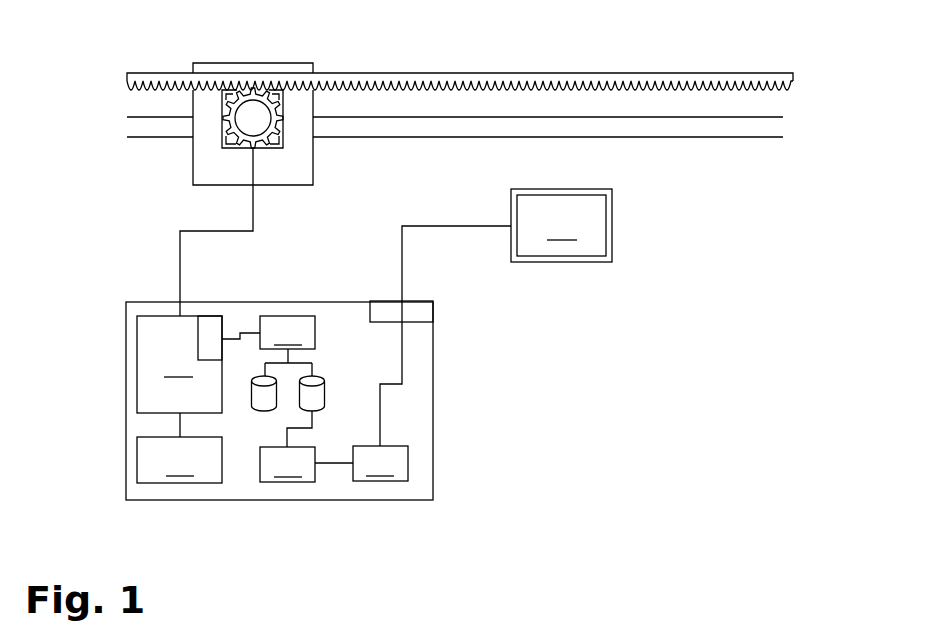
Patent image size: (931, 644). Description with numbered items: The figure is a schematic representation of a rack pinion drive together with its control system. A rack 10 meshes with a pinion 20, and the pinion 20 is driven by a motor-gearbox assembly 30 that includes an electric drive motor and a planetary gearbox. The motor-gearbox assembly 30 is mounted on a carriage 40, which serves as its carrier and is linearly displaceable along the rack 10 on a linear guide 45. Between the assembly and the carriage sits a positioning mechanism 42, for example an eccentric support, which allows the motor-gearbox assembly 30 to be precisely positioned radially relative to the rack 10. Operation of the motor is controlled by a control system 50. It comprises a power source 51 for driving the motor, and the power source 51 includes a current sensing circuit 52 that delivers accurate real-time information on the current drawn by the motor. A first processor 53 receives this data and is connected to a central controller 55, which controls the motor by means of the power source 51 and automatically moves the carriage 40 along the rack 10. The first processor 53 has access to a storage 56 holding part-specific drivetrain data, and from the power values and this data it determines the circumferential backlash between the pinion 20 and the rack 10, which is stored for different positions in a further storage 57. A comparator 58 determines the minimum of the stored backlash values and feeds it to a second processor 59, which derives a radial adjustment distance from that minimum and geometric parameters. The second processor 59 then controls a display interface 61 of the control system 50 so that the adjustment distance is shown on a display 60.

The rack 10 is at (497, 78).
The pinion 20 is at (258, 88).
The motor-gearbox assembly 30 is at (233, 88).
The carriage 40 is at (207, 180).
The positioning mechanism 42 is at (220, 146).
The linear guide 45 is at (700, 128).
The control system 50 is at (415, 492).
The power source 51 is at (179, 364).
The current sensing circuit 52 is at (208, 335).
The first processor 53 is at (287, 332).
The central controller 55 is at (179, 460).
The storage 56 is at (261, 410).
The further storage 57 is at (320, 380).
The comparator 58 is at (287, 464).
The second processor 59 is at (380, 463).
The display 60 is at (561, 225).
The display interface 61 is at (420, 311).